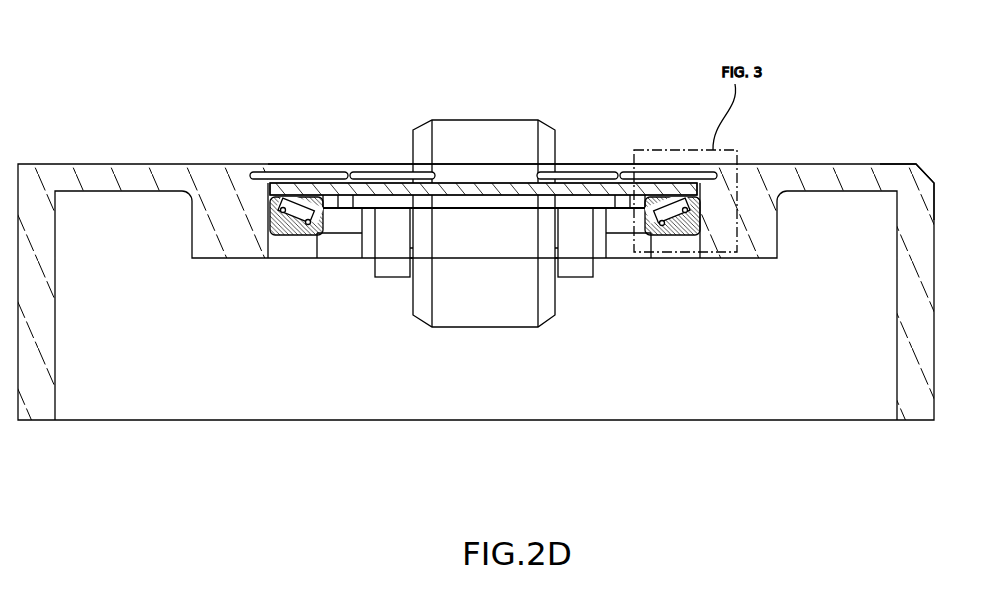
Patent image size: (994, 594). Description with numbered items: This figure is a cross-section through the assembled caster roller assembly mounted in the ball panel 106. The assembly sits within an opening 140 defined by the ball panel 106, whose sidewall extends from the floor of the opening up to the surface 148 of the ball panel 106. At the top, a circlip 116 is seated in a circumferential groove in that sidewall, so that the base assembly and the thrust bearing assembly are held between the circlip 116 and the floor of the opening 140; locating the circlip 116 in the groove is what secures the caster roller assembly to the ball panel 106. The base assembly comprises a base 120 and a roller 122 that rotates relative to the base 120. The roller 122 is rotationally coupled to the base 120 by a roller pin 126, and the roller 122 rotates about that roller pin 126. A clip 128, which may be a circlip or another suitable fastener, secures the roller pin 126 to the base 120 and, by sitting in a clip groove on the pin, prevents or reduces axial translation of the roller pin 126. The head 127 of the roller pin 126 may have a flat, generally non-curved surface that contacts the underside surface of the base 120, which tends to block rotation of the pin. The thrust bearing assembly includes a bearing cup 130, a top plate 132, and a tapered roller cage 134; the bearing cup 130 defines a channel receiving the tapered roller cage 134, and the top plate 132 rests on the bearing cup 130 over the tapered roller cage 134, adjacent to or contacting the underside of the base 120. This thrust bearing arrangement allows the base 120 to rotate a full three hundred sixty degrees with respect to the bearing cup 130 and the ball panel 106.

The ball panel 106 is at (154, 179).
The circlip 116 is at (289, 178).
The base 120 is at (603, 187).
The roller 122 is at (484, 223).
The roller pin 126 is at (602, 240).
The head 127 is at (365, 259).
The clip 128 is at (594, 260).
The bearing cup 130 is at (289, 236).
The top plate 132 is at (660, 200).
The tapered roller cage 134 is at (670, 216).
The opening 140 is at (339, 158).
The surface 148 is at (835, 163).